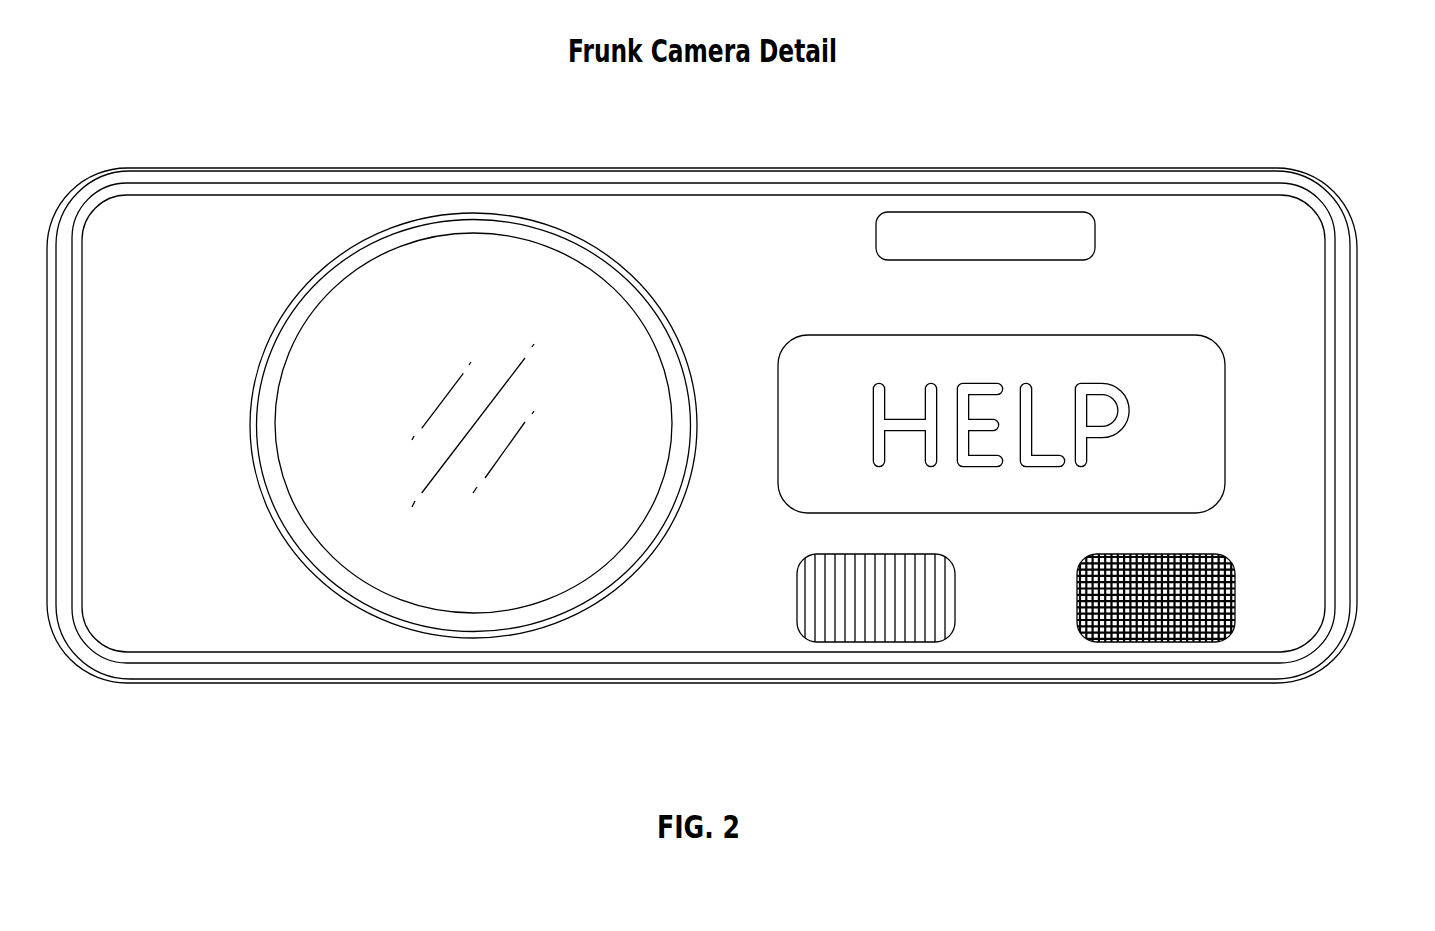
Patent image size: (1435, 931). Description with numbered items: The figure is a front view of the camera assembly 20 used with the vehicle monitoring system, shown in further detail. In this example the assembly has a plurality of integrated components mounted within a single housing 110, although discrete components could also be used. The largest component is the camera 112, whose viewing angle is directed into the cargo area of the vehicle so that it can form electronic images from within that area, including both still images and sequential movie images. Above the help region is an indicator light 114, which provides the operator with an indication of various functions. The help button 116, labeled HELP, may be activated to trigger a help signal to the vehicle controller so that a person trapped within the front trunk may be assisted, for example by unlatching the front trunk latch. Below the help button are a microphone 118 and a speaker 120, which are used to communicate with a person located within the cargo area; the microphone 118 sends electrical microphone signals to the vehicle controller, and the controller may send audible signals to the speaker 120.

The camera assembly 20 is at (1221, 167).
The housing 110 is at (628, 181).
The camera 112 is at (472, 212).
The indicator light 114 is at (987, 210).
The help button 116 is at (1225, 425).
The microphone 118 is at (866, 617).
The speaker 120 is at (1160, 617).